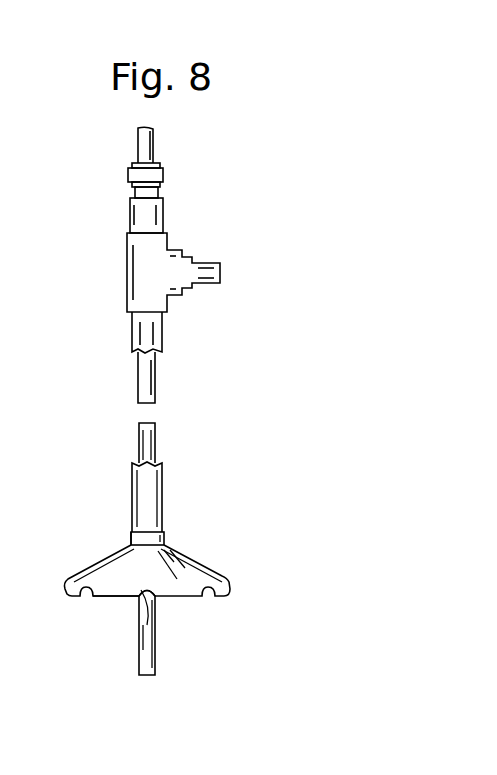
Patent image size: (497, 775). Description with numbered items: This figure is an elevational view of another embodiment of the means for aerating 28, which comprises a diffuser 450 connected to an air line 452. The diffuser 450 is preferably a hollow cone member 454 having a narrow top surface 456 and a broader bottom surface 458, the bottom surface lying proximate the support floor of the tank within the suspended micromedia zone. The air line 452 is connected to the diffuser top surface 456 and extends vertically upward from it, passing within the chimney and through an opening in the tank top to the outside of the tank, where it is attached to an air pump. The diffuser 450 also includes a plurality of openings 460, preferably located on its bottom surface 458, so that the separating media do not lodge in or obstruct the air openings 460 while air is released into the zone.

The means for aerating 28 is at (270, 519).
The diffuser 450 is at (197, 567).
The air line 452 is at (163, 503).
The hollow cone member 454 is at (167, 547).
The narrow top surface 456 is at (130, 540).
The broader bottom surface 458 is at (115, 598).
The openings 460 is at (152, 622).